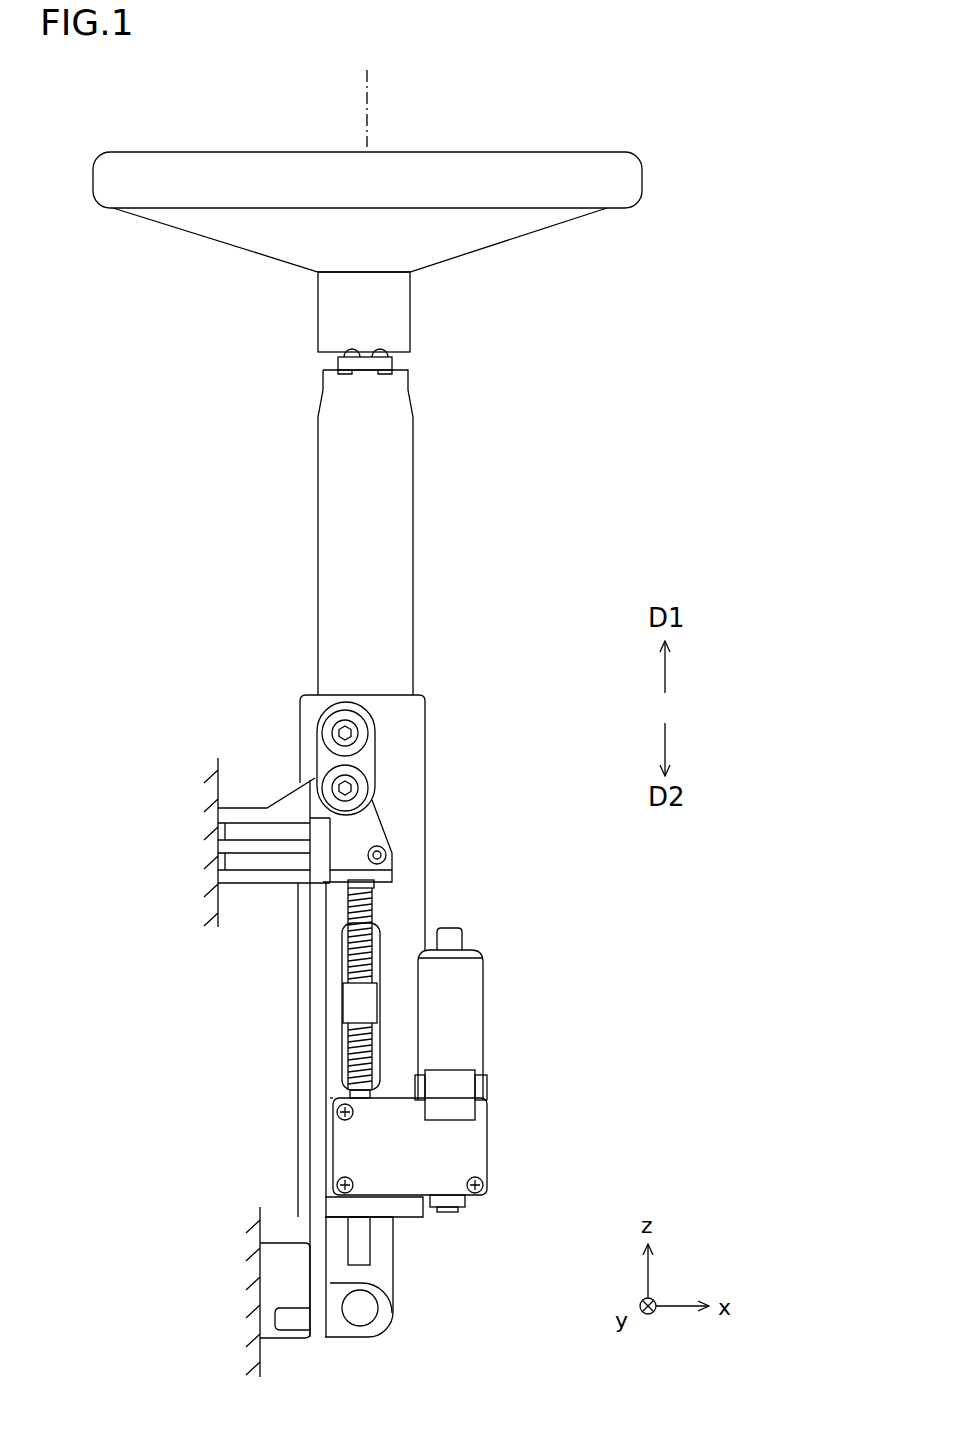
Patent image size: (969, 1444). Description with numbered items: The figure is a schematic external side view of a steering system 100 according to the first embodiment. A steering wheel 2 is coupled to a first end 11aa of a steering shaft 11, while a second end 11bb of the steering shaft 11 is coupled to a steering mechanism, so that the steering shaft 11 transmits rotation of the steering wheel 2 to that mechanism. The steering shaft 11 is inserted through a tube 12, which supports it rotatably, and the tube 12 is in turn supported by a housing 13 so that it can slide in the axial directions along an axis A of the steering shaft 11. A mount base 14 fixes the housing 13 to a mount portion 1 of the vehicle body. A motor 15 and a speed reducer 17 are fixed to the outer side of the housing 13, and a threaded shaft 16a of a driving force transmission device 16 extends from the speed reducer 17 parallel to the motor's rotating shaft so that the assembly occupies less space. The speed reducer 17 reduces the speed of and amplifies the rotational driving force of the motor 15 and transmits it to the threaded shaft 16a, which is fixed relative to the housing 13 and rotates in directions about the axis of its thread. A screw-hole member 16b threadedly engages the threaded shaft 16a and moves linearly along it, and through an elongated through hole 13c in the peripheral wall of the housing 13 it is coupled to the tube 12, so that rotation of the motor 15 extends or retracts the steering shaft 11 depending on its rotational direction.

The axis A is at (367, 117).
The steering wheel 2 is at (595, 152).
The steering system 100 is at (592, 306).
The steering shaft 11 is at (335, 362).
The first end 11aa is at (392, 362).
The second end 11bb is at (370, 1255).
The tube 12 is at (317, 475).
The housing 13 is at (425, 722).
The through hole 13c is at (345, 1050).
The mount base 14 is at (252, 808).
The motor 15 is at (484, 1013).
The driving force transmission device 16 is at (374, 961).
The threaded shaft 16a is at (378, 948).
The screw-hole member 16b is at (380, 1003).
The speed reducer 17 is at (490, 1145).
The mount portion 1 is at (218, 905).